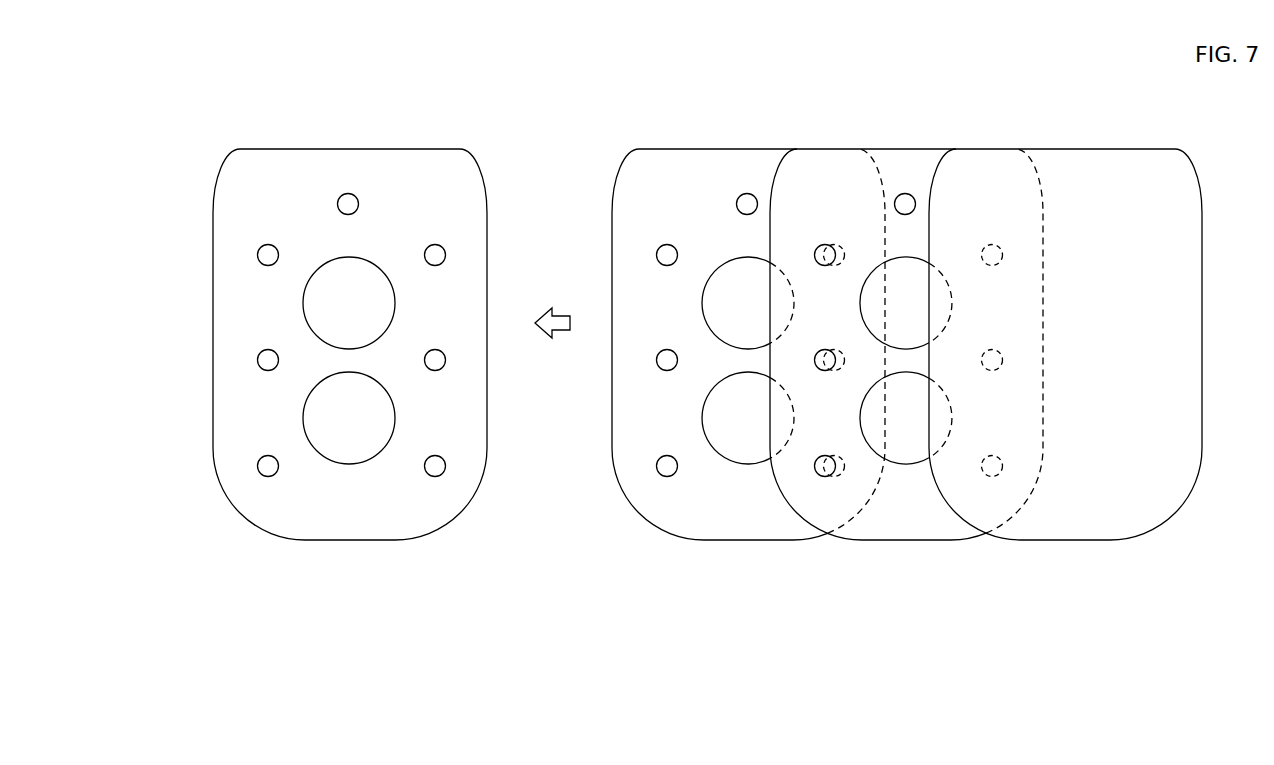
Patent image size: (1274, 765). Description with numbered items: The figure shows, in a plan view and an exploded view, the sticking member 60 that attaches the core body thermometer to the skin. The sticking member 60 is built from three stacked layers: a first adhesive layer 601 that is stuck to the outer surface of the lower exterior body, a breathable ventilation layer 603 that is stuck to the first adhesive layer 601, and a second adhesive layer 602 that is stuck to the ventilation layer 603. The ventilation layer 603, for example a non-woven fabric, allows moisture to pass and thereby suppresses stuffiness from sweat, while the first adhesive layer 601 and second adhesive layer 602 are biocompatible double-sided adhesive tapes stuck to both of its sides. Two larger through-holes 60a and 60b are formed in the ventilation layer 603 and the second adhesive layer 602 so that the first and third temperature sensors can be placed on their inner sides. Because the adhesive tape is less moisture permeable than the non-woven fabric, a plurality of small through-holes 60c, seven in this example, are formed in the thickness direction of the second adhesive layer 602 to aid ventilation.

The sticking member 60 is at (221, 398).
The through-hole 60a is at (303, 319).
The through-hole 60b is at (303, 434).
The through-holes 60c is at (355, 208).
The first adhesive layer 601 is at (1069, 528).
The second adhesive layer 602 is at (746, 528).
The ventilation layer 603 is at (906, 528).